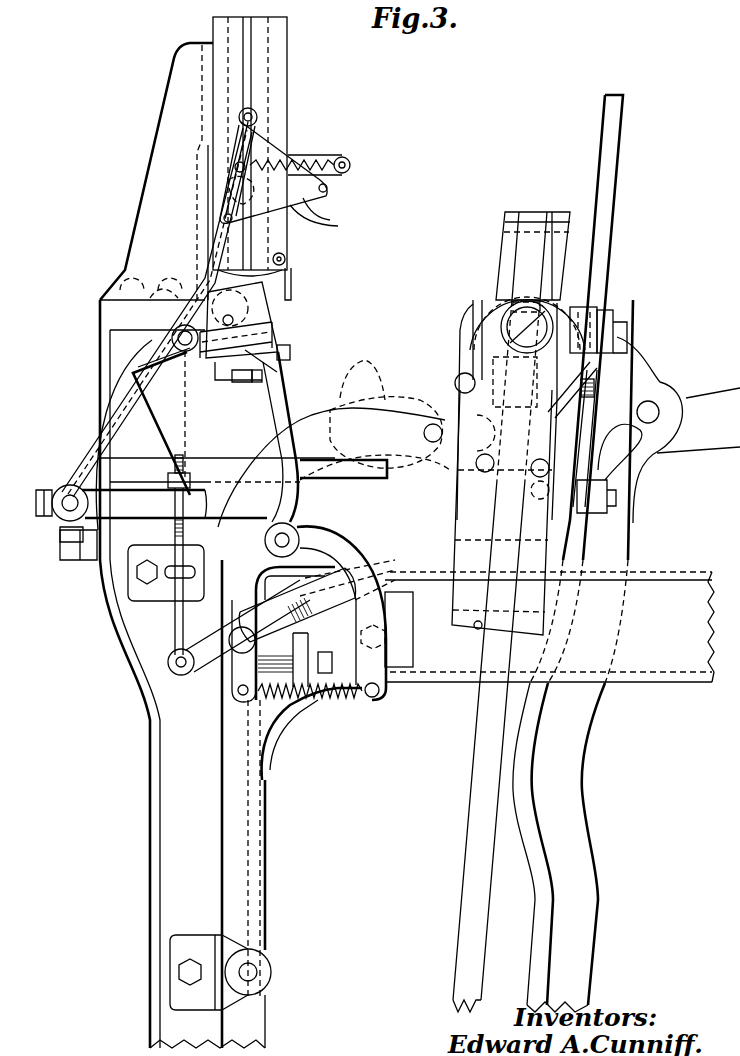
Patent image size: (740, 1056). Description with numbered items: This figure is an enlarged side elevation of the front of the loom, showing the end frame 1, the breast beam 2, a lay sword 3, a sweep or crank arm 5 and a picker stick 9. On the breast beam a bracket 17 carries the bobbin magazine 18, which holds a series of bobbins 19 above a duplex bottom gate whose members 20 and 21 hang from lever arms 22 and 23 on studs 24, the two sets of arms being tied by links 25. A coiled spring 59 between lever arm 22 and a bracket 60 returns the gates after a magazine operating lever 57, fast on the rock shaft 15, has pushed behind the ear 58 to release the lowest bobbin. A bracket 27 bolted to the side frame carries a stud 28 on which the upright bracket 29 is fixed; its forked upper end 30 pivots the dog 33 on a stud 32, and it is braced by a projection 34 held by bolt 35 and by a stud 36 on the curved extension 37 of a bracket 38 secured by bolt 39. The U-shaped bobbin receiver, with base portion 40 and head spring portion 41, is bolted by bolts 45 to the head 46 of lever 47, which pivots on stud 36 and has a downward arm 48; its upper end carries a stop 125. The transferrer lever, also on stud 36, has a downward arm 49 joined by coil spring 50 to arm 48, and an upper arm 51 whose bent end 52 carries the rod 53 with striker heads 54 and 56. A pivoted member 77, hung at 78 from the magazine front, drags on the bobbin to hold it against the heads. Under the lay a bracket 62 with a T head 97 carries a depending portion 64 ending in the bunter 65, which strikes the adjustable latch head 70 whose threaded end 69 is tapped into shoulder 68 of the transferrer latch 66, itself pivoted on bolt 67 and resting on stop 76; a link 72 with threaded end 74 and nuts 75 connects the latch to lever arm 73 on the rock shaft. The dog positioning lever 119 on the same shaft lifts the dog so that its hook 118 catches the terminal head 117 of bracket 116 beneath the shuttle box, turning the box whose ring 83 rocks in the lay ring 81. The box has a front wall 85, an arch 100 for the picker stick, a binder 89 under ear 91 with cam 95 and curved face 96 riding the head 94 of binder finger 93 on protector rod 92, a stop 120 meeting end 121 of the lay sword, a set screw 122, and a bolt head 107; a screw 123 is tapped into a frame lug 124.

The end frame 1 is at (160, 778).
The breast beam 2 is at (106, 323).
The lay sword 3 is at (590, 880).
The sweep or crank arm 5 is at (690, 396).
The picker stick 9 is at (478, 797).
The rock shaft 15 is at (62, 500).
The bracket 17 is at (165, 126).
The bobbin magazine 18 is at (276, 42).
The bobbin 19 is at (238, 300).
The gate or shelf 20 is at (200, 292).
The gate or shelf 21 is at (325, 228).
The lever arm 22 is at (226, 218).
The lever arm 23 is at (292, 155).
The stud 24 is at (256, 114).
The link 25 is at (298, 215).
The bracket 27 is at (172, 977).
The stud 28 is at (253, 976).
The upright bracket 29 is at (267, 832).
The fork 30 is at (372, 480).
The stud 32 is at (433, 424).
The dog 33 is at (348, 412).
The projection 34 is at (155, 594).
The bolt 35 is at (132, 577).
The stud 36 is at (284, 538).
The curved upper extension 37 is at (330, 534).
The bracket 38 is at (408, 630).
The bolt 39 is at (385, 637).
The base portion 40 is at (278, 368).
The head spring portion 41 is at (262, 305).
The bolt 45 is at (252, 382).
The head or upper end 46 is at (230, 380).
The lever 47 is at (282, 397).
The downwardly extending arm 48 is at (380, 702).
The arm 49 is at (238, 594).
The coil spring 50 is at (338, 700).
The upper arm 51 is at (143, 428).
The bent upper end 52 is at (167, 415).
The rod 53 is at (183, 352).
The striker head 54 is at (266, 328).
The striker head 56 is at (175, 298).
The magazine operating lever 57 is at (205, 263).
The lug or ear 58 is at (226, 191).
The coiled spring 59 is at (245, 164).
The bracket 60 is at (340, 157).
The bracket 62 is at (532, 492).
The depending portion 64 is at (456, 537).
The foot or bunter 65 is at (474, 630).
The transferrer latch 66 is at (283, 660).
The bolt 67 is at (238, 648).
The shoulder 68 is at (295, 633).
The threaded end 69 is at (292, 610).
The adjustable latch head 70 is at (370, 560).
The link 72 is at (177, 620).
The lever arm 73 is at (163, 525).
The threaded end 74 is at (172, 458).
The nuts 75 is at (190, 475).
The stop 76 is at (300, 640).
The member 77 is at (291, 285).
The upper end pivot 78 is at (286, 260).
The ring or annulus 81 is at (569, 256).
The ring or annulus 83 is at (496, 272).
The front wall 85 is at (470, 340).
The binder 89 is at (605, 318).
The ear 91 is at (590, 306).
The protector rod 92 is at (548, 505).
The binder finger 93 is at (625, 474).
The head 94 is at (616, 336).
The cam 95 is at (566, 402).
The curved outer face 96 is at (542, 457).
The T head 97 is at (472, 484).
The arch 100 is at (542, 212).
The head 107 is at (518, 318).
The bracket 116 is at (507, 404).
The terminal head 117 is at (455, 382).
The hook 118 is at (378, 388).
The dog positioning lever 119 is at (224, 470).
The stop 120 is at (478, 322).
The end 121 is at (590, 405).
The set screw 122 is at (594, 380).
The screw 123 is at (246, 700).
The lug or ear 124 is at (306, 726).
The stop 125 is at (292, 350).